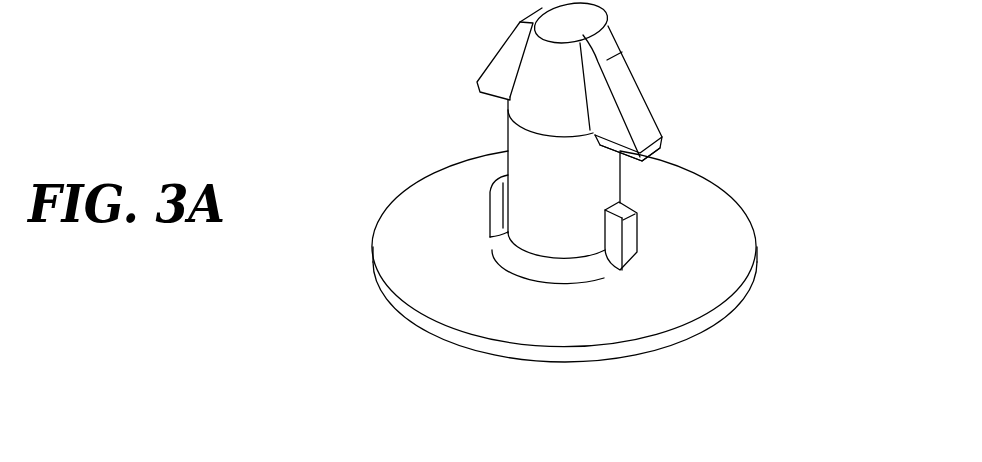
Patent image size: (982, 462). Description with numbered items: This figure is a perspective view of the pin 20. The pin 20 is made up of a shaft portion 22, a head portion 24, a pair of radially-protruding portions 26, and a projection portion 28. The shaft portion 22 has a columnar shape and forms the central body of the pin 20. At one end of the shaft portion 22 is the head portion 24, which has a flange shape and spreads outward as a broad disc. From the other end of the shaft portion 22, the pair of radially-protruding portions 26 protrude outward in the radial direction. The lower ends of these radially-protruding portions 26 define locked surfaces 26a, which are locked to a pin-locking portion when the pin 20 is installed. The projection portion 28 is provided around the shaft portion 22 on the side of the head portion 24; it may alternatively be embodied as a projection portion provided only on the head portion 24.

The pin 20 is at (580, 404).
The shaft portion 22 is at (537, 167).
The head portion 24 is at (715, 272).
The radially-protruding portions 26 is at (503, 58).
The locked surfaces 26a is at (643, 161).
The projection portion 28 is at (497, 202).